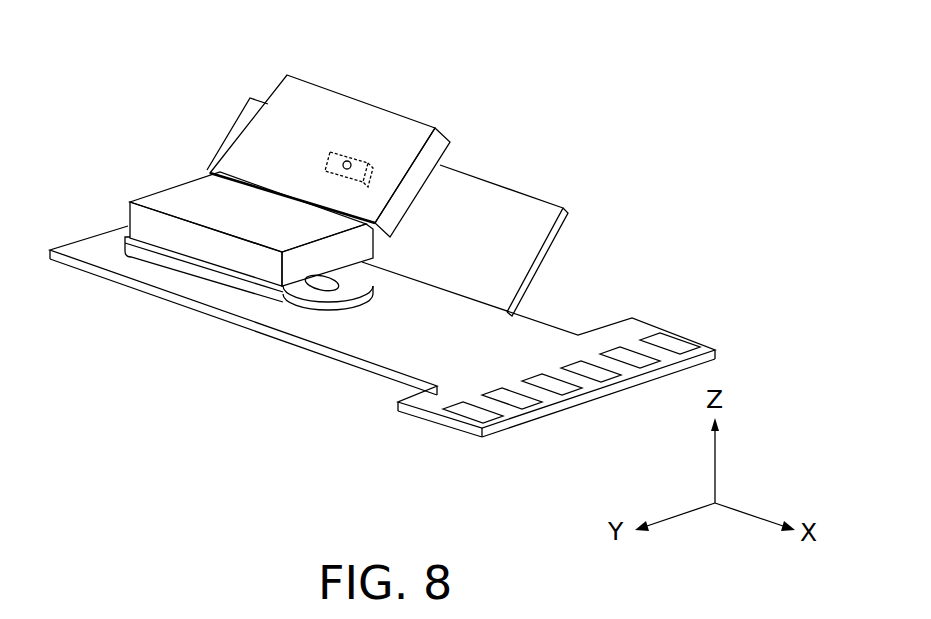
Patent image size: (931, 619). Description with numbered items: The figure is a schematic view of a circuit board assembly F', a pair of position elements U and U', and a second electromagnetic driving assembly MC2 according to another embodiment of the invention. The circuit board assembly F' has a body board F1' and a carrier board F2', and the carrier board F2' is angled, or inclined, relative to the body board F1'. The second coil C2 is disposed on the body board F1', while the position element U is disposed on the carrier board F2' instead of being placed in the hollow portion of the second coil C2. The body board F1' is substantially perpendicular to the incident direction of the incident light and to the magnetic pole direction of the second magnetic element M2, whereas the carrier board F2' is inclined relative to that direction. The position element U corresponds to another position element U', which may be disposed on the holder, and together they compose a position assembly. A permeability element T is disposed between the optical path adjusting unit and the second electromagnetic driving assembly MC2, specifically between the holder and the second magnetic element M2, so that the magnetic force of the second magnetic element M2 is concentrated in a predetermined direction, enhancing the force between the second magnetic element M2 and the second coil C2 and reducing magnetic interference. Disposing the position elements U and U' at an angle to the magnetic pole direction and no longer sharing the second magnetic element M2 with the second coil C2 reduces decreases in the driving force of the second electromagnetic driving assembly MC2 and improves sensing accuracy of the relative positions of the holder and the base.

The circuit board assembly F' is at (384, 331).
The body board F1' is at (245, 349).
The carrier board F2' is at (513, 235).
The position element U' is at (328, 143).
The position element U is at (397, 137).
The permeability element T is at (187, 195).
The second electromagnetic driving assembly MC2 is at (424, 228).
The second coil C2 is at (170, 263).
The second magnetic element M2 is at (250, 262).